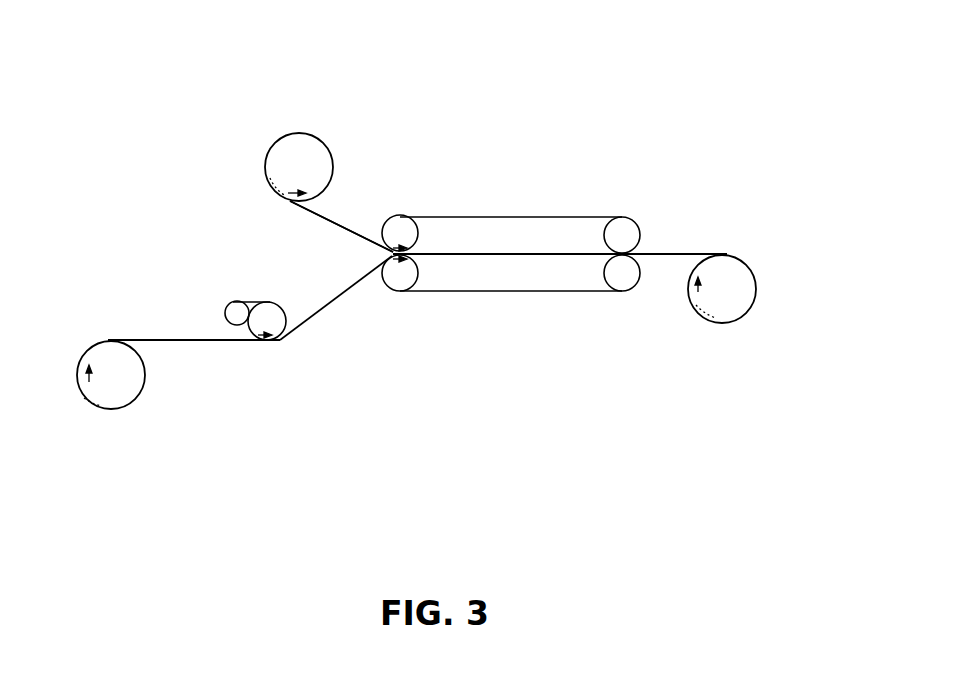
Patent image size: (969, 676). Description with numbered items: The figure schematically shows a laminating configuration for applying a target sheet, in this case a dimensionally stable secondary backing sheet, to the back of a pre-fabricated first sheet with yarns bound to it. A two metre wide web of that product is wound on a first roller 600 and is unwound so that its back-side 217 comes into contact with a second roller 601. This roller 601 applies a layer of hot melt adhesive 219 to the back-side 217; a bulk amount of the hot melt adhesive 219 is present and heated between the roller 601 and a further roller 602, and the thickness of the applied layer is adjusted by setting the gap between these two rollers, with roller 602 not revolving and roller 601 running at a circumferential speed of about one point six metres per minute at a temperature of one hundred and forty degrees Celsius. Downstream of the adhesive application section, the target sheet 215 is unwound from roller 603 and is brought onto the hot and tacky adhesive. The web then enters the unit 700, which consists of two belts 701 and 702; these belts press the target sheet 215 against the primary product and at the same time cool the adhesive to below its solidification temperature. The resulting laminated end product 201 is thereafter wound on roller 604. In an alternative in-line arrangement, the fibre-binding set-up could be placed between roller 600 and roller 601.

The unit 700 is at (510, 168).
The belt 701 is at (573, 217).
The belt 702 is at (472, 291).
The end product 201 is at (689, 243).
The target sheet 215 is at (340, 225).
The back-side 217 is at (132, 330).
The hot melt adhesive (HMA) 219 is at (250, 292).
The first roller 600 is at (147, 372).
The second roller 601 is at (270, 310).
The roller 602 is at (233, 307).
The roller 603 is at (308, 148).
The roller 604 is at (745, 298).